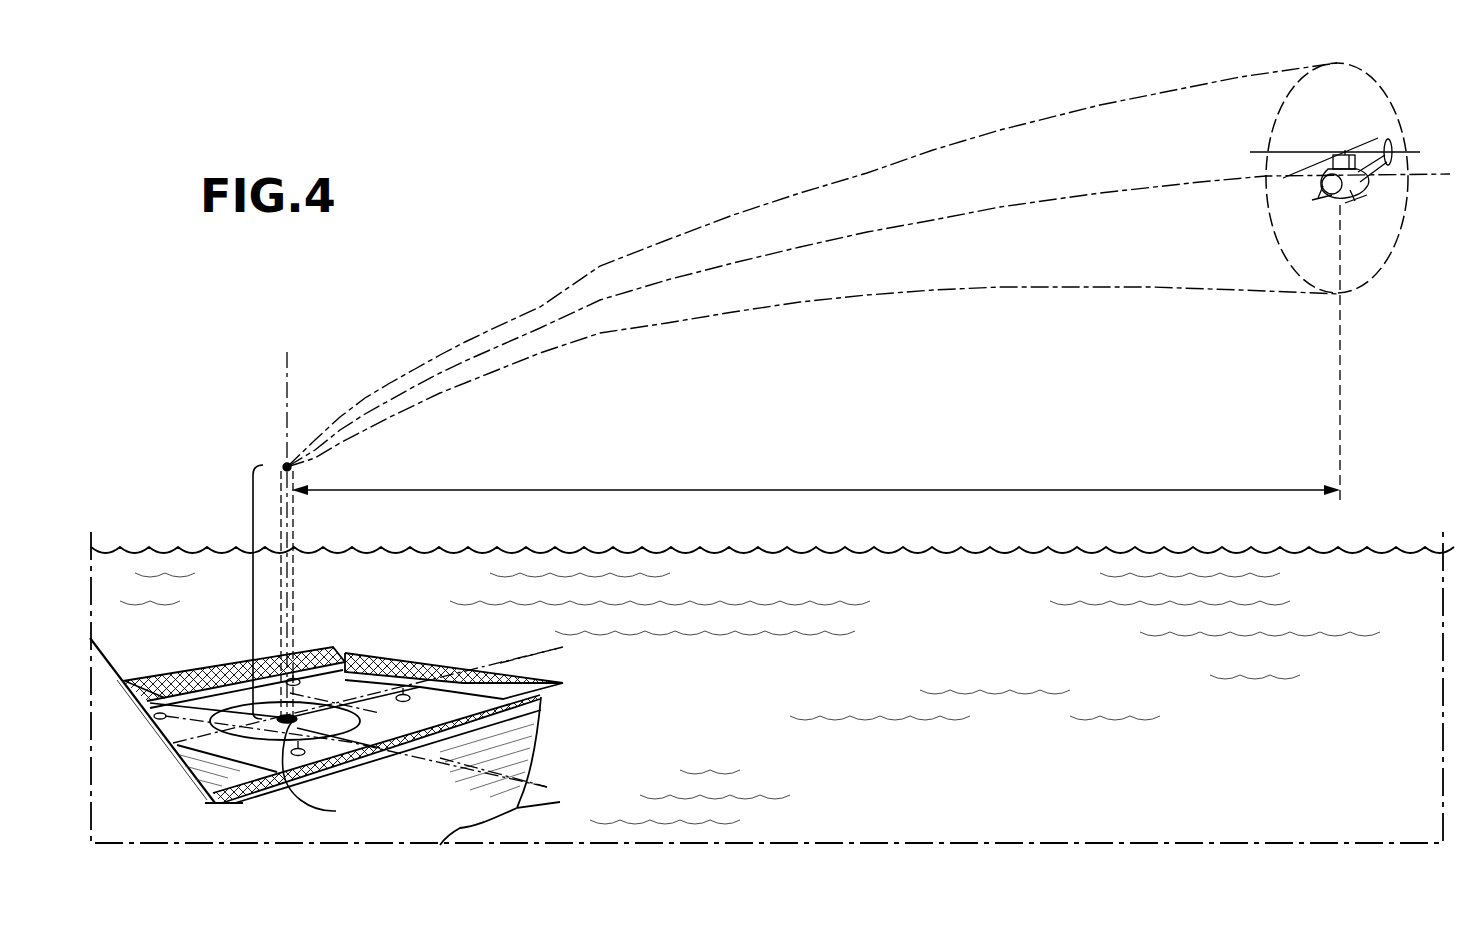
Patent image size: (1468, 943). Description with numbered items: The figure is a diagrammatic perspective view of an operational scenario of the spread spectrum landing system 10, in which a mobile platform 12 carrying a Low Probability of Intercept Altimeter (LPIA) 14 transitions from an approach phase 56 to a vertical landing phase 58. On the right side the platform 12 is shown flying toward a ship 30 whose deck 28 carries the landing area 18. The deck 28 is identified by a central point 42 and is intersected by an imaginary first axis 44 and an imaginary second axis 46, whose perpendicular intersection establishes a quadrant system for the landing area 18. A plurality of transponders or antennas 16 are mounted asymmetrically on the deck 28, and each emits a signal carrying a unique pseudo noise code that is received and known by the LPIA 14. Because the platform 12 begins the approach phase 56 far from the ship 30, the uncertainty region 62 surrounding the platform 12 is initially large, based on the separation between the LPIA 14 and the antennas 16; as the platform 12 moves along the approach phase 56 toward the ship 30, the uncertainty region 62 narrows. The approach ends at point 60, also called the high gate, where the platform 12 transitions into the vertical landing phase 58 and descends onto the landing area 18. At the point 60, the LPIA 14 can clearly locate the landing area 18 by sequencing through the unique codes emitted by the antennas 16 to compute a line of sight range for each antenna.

The spread spectrum landing system 10 is at (550, 136).
The platform 12 is at (1375, 204).
The Low Probability of Intercept Altimeter (LPIA) 14 is at (1336, 198).
The plurality of transponders or antennas 16 is at (392, 722).
The landing area 18 is at (343, 689).
The deck 28 is at (358, 681).
The ship 30 is at (550, 742).
The central point 42 is at (324, 773).
The first axis 44 is at (548, 648).
The second axis 46 is at (493, 770).
The approach phase 56 is at (857, 490).
The vertical landing phase 58 is at (251, 634).
The point 60 is at (283, 466).
The uncertainty region 62 is at (1337, 63).